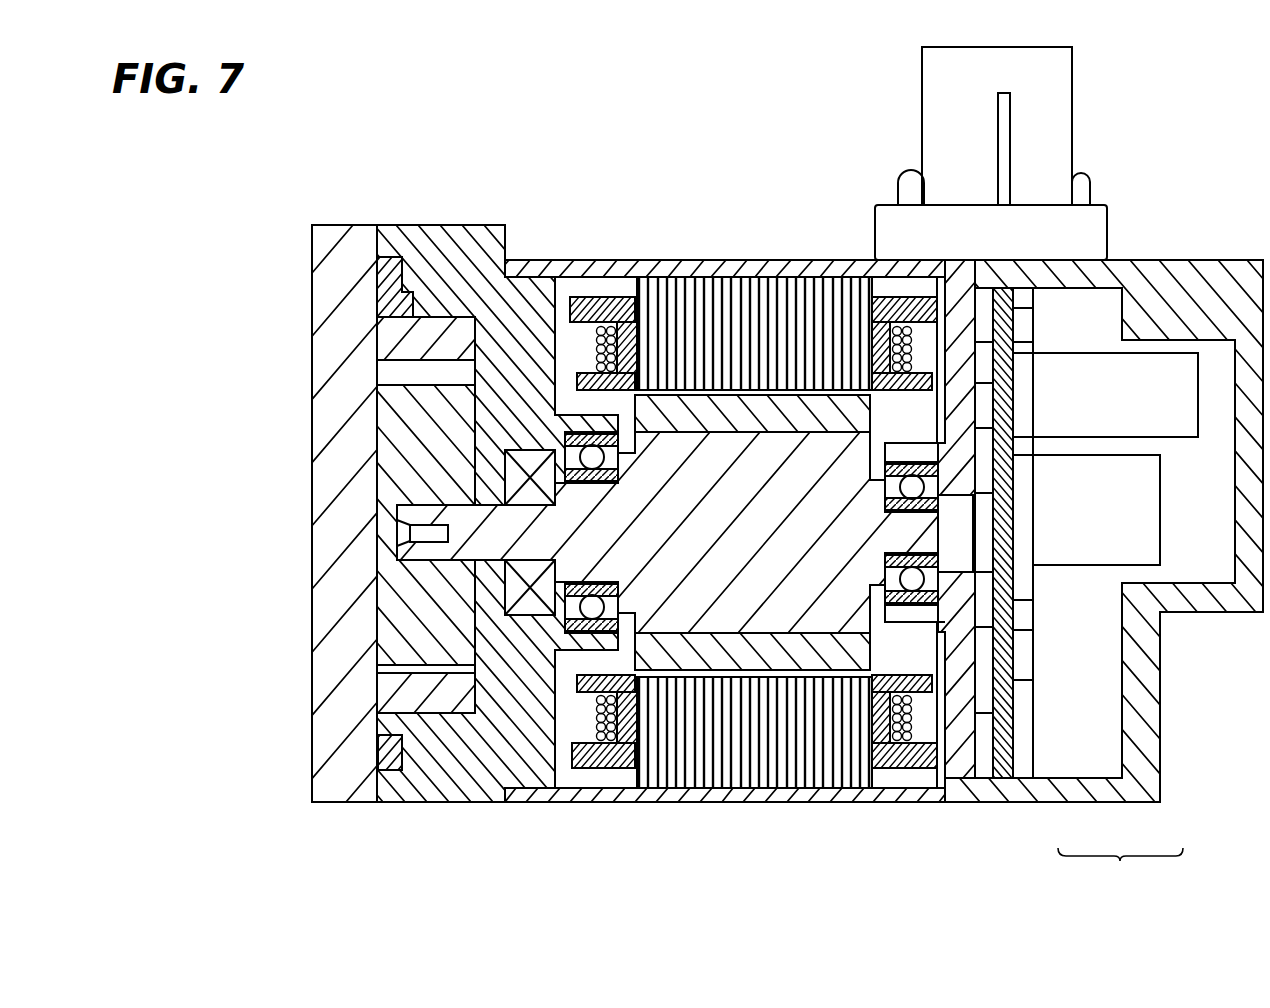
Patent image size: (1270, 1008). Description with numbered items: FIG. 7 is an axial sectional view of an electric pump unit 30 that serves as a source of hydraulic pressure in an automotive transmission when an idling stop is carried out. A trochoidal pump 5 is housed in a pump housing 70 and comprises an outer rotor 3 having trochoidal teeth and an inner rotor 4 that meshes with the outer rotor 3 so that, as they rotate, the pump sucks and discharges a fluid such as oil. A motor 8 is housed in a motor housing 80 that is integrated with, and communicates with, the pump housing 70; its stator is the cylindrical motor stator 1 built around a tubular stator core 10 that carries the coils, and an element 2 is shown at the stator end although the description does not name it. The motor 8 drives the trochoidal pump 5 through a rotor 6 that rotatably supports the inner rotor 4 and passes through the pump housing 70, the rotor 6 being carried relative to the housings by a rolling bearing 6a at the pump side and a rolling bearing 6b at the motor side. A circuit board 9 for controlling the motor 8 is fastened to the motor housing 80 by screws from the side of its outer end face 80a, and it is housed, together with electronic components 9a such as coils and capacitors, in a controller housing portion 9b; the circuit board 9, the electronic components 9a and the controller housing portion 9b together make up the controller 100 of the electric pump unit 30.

The motor stator 1 is at (717, 274).
The stator coil insulator 2 is at (587, 296).
The outer rotor 3 is at (466, 310).
The inner rotor 4 is at (400, 440).
The trochoidal pump 5 is at (413, 303).
The rotor 6 is at (717, 612).
The rolling bearing 6a is at (575, 640).
The rolling bearing 6b is at (918, 617).
The motor 8 is at (778, 235).
The circuit board 9 is at (1005, 762).
The electronic components 9a is at (1093, 415).
The controller housing portion 9b is at (1073, 540).
The stator core 10 is at (655, 290).
The electric pump unit 30 is at (1167, 184).
The pump housing 70 is at (482, 225).
The motor housing 80 is at (812, 262).
The outer end face 80a is at (988, 580).
The controller 100 is at (1120, 869).